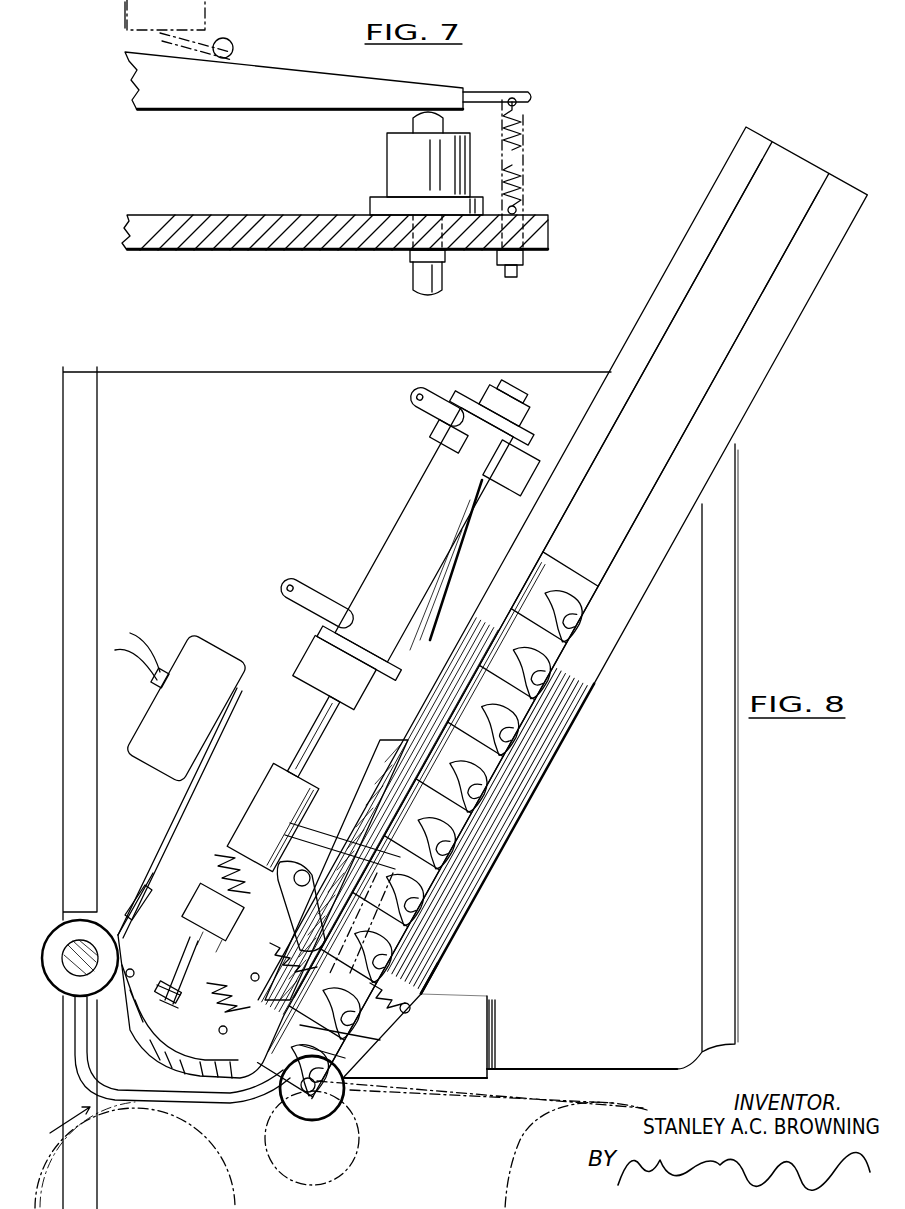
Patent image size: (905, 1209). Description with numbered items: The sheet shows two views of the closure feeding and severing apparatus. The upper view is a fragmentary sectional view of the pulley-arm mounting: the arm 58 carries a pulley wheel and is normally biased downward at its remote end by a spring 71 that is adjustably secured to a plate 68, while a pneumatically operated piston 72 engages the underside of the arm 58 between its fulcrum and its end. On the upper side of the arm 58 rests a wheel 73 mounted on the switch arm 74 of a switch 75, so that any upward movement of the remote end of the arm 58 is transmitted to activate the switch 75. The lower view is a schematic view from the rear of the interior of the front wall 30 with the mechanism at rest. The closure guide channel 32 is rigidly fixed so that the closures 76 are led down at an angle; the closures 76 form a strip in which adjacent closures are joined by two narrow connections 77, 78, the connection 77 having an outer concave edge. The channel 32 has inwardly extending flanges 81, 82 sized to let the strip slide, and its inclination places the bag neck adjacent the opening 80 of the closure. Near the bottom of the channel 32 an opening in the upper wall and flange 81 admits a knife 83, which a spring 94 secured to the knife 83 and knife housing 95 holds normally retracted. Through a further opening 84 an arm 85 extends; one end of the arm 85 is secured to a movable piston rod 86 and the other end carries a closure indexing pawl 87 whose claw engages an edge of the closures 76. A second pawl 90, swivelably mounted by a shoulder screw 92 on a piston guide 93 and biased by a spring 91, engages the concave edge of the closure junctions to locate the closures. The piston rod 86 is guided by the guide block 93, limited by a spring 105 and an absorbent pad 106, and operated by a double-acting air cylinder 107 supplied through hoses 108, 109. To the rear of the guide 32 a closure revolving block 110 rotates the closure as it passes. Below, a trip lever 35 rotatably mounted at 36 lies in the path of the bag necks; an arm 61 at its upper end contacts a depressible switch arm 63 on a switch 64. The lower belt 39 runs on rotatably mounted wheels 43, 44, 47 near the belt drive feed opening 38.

In FIG. 8, the front wall 30 is at (242, 474).
In FIG. 8, the closure guide channel 32 is at (678, 242).
In FIG. 8, the trip lever 35 is at (85, 1092).
In FIG. 8, the pivot mounting of trip lever 36 is at (72, 966).
In FIG. 8, the belt drive feed opening 38 is at (53, 1131).
In FIG. 8, the lower belt 39 is at (443, 1093).
In FIG. 8, the wheel 43 is at (228, 1185).
In FIG. 8, the wheel 44 is at (350, 1157).
In FIG. 8, the wheel 47 is at (515, 1158).
In FIG. 7, the arm 58 is at (306, 62).
In FIG. 8, the arm 61 is at (128, 912).
In FIG. 8, the depressible switch arm 63 is at (175, 825).
In FIG. 8, the switch 64 is at (200, 650).
In FIG. 7, the plate 68 is at (278, 215).
In FIG. 7, the spring 71 is at (530, 124).
In FIG. 7, the pneumatically operated piston 72 is at (400, 126).
In FIG. 7, the wheel 73 is at (234, 45).
In FIG. 7, the switch arm 74 is at (210, 32).
In FIG. 7, the switch 75 is at (127, 12).
In FIG. 8, the closures 76 is at (520, 597).
In FIG. 8, the connection 77 is at (380, 1040).
In FIG. 8, the connection 78 is at (345, 1058).
In FIG. 8, the opening of the closure 80 is at (278, 1082).
In FIG. 8, the flange 81 is at (586, 472).
In FIG. 8, the flange 82 is at (652, 500).
In FIG. 8, the knife 83 is at (245, 1015).
In FIG. 8, the opening 84 is at (366, 805).
In FIG. 8, the arm 85 is at (336, 820).
In FIG. 8, the piston rod 86 is at (318, 716).
In FIG. 8, the closure indexing pawl 87 is at (443, 940).
In FIG. 8, the second pawl 90 is at (284, 905).
In FIG. 8, the spring 91 is at (410, 972).
In FIG. 8, the shoulder screw 92 is at (296, 870).
In FIG. 8, the piston guide 93 is at (240, 830).
In FIG. 8, the spring 94 is at (250, 975).
In FIG. 8, the knife housing 95 is at (150, 1030).
In FIG. 8, the spring 105 is at (214, 858).
In FIG. 8, the absorbent pad 106 is at (192, 935).
In FIG. 8, the double-acting air cylinder 107 is at (405, 522).
In FIG. 8, the hose 108 is at (313, 590).
In FIG. 8, the hose 109 is at (428, 418).
In FIG. 8, the closure revolving block 110 is at (490, 1016).